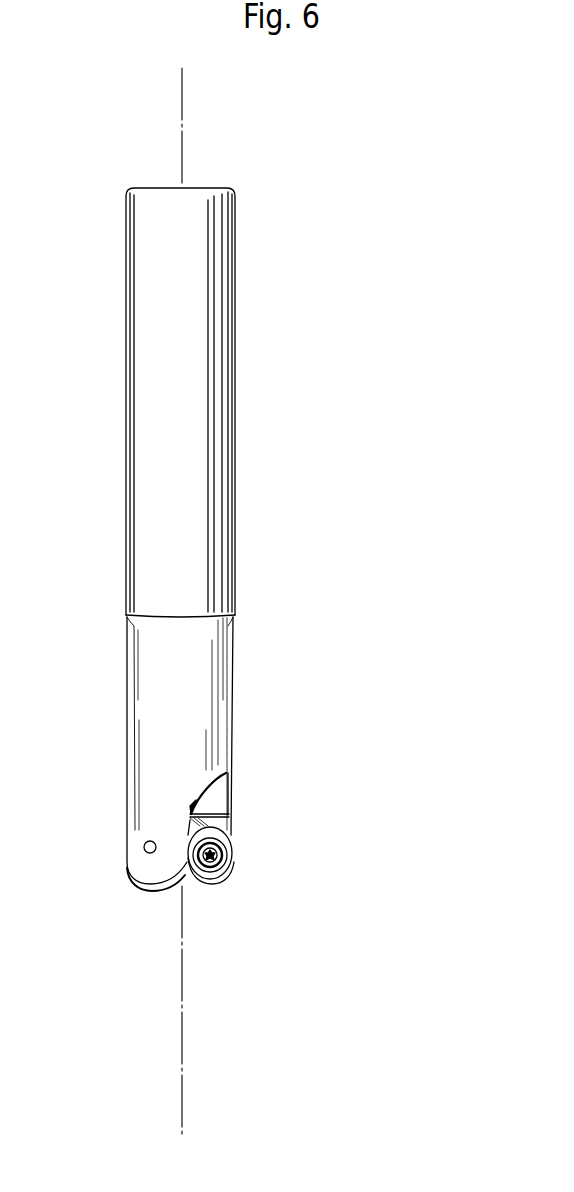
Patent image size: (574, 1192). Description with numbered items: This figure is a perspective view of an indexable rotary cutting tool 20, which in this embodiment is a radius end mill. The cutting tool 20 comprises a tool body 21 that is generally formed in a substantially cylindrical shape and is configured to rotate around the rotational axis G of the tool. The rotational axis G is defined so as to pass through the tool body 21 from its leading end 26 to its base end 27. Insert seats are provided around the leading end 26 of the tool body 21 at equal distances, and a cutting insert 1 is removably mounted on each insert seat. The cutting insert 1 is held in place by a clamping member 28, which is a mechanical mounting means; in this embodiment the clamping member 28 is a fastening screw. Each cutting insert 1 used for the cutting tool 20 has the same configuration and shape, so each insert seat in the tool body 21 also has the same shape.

The cutting tool 20 is at (299, 413).
The base end 27 is at (195, 186).
The tool body 21 is at (184, 749).
The leading end 26 is at (160, 888).
The cutting insert 1 is at (213, 884).
The clamping member 28 is at (230, 847).
The rotational axis G is at (183, 1028).